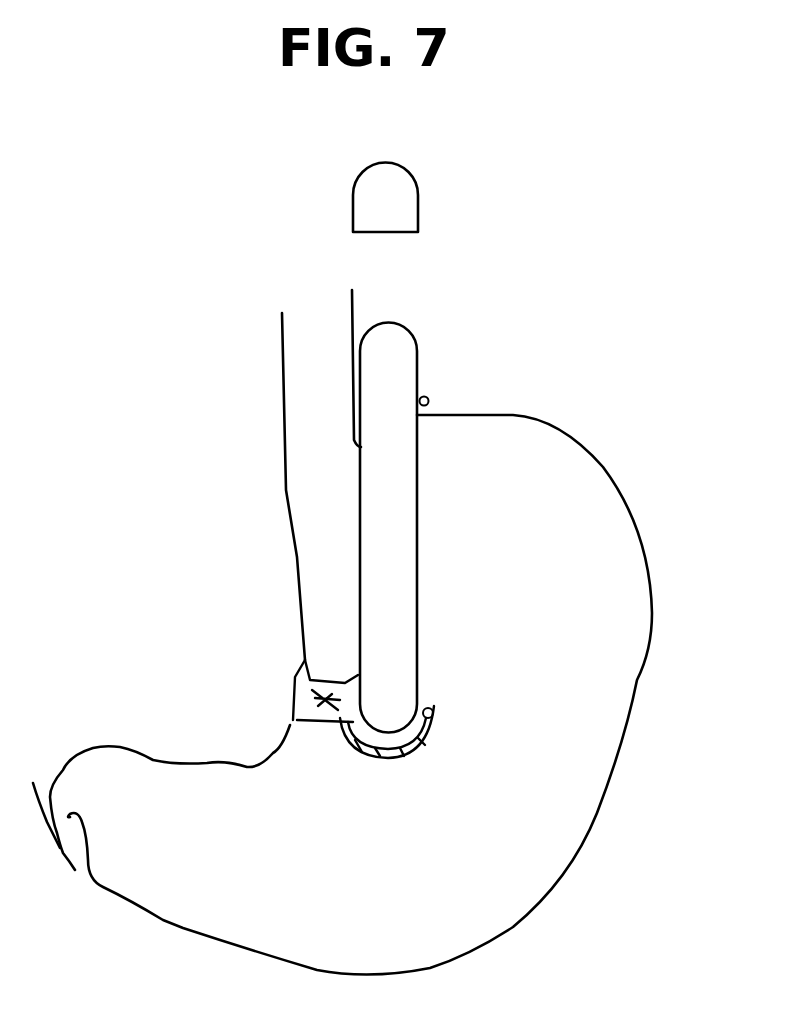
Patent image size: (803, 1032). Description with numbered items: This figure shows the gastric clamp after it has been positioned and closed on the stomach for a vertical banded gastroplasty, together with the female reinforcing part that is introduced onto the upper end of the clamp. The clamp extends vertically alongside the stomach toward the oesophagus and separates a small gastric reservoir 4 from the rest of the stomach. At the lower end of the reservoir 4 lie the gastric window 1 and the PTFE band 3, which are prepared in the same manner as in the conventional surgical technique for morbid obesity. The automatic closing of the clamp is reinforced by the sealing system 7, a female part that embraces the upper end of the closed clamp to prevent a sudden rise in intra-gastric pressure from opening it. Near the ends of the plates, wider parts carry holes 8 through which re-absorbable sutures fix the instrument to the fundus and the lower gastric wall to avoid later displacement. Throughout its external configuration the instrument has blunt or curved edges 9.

The gastric window 1 is at (392, 756).
The PTFE band 3 is at (297, 695).
The reservoir 4 is at (330, 530).
The sealing system 7 is at (380, 210).
The holes 8 is at (426, 400).
The blunt or curved edges 9 is at (380, 537).